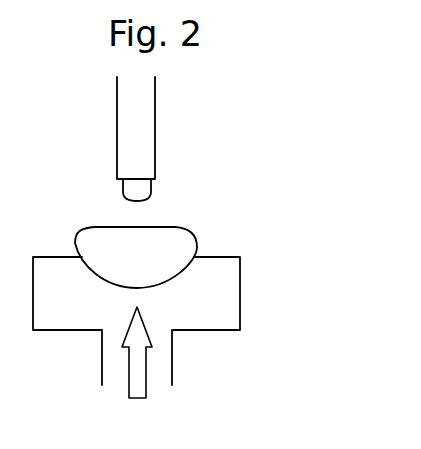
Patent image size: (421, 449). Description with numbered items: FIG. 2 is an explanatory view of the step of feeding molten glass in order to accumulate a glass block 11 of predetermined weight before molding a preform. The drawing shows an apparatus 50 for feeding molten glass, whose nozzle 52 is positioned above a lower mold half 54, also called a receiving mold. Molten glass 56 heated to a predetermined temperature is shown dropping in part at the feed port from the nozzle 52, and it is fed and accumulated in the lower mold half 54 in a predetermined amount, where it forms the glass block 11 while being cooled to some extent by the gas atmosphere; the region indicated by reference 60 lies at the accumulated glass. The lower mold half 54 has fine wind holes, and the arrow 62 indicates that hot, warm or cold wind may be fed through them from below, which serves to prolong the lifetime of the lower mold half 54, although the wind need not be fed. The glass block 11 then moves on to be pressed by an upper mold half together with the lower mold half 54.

The glass block 11 is at (151, 270).
The apparatus 50 is at (333, 202).
The nozzle 52 is at (145, 111).
The lower mold half 54 is at (228, 292).
The molten glass 56 is at (138, 193).
The molten portion 60 is at (99, 272).
The arrow 62 is at (147, 375).